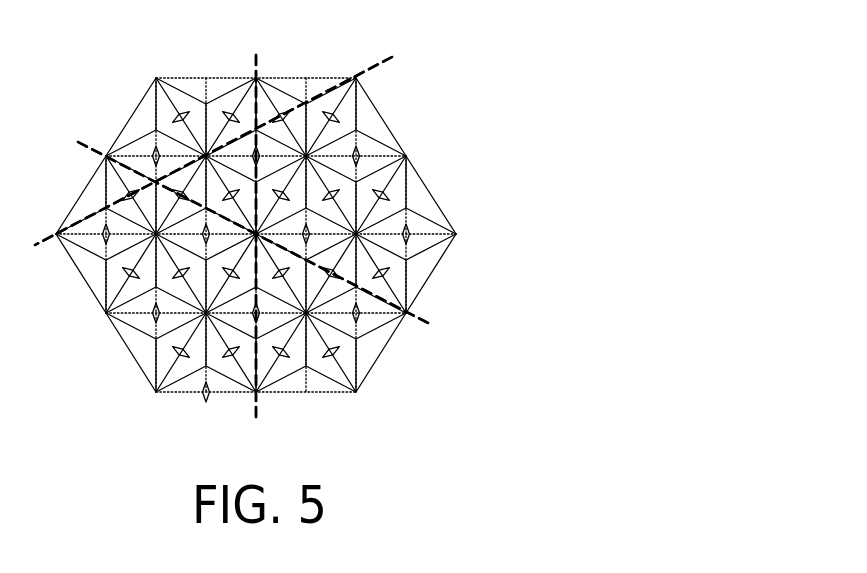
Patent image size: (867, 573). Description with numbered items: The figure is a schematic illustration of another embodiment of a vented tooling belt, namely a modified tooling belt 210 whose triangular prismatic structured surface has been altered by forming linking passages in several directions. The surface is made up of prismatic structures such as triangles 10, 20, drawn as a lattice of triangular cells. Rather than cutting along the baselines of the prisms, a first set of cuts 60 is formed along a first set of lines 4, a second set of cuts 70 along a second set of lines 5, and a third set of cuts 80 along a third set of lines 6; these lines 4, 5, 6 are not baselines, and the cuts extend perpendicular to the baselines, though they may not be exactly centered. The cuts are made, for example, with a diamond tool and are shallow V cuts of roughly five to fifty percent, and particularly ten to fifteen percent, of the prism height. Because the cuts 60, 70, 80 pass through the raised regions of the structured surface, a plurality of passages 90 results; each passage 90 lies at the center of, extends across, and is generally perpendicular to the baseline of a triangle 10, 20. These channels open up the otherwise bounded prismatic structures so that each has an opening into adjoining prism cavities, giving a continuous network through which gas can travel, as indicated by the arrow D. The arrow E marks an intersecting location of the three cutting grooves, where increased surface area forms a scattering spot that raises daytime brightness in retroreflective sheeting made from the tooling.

The modified tooling belt 210 is at (556, 77).
The triangle 10 is at (177, 221).
The triangle 20 is at (233, 158).
The passage 90 is at (410, 230).
The first set of lines 4 is at (236, 220).
The first set of cuts 60 is at (249, 220).
The second set of lines 5 is at (223, 136).
The second set of cuts 70 is at (239, 136).
The third set of lines 6 is at (244, 221).
The third set of cuts 80 is at (271, 221).
The arrow E is at (324, 150).
The arrow D is at (206, 401).